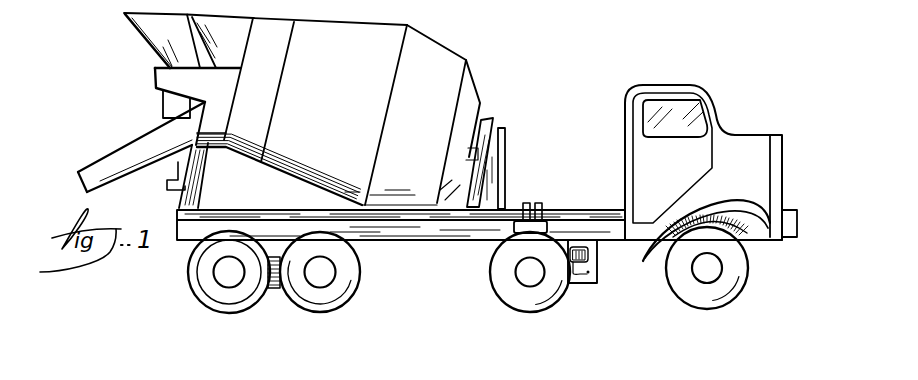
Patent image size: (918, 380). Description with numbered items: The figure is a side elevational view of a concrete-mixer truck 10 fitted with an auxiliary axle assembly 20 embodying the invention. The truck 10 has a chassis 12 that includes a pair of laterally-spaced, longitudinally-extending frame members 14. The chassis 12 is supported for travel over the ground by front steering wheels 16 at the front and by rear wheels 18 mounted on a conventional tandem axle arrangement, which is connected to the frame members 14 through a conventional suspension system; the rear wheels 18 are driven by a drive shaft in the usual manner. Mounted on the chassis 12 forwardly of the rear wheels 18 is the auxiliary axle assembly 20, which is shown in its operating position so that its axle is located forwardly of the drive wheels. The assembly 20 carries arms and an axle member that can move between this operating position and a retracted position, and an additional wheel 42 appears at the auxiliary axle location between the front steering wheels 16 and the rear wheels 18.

The concrete-mixer truck 10 is at (537, 68).
The chassis 12 is at (580, 213).
The frame members 14 is at (422, 232).
The front steering wheels 16 is at (742, 265).
The rear wheels 18 is at (204, 302).
The auxiliary axle assembly 20 is at (598, 275).
The support wheel 42 is at (490, 263).